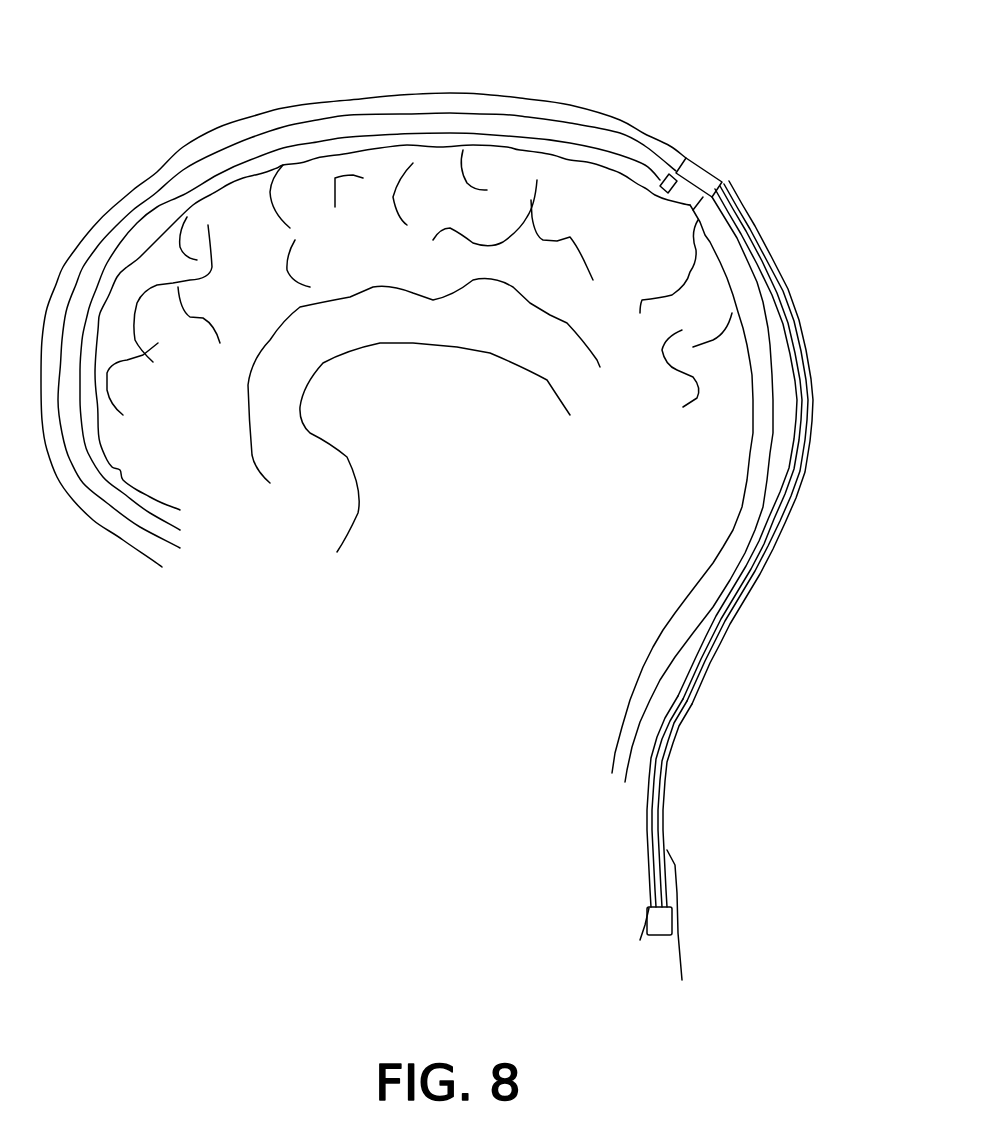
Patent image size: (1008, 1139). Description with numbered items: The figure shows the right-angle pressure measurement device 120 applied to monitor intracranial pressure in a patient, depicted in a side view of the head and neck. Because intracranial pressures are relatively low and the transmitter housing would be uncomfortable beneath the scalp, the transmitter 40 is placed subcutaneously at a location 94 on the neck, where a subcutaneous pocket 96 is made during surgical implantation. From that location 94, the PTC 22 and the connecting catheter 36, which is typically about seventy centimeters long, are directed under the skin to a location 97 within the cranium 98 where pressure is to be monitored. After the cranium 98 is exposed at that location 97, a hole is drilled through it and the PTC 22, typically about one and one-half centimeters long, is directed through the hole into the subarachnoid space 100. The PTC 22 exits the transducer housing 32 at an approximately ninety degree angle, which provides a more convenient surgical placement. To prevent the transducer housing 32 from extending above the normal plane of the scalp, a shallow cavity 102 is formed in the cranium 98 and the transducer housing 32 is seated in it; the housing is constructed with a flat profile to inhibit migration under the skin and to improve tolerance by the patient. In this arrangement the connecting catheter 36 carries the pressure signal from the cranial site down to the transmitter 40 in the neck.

The PTC 22 is at (667, 176).
The transducer housing 32 is at (695, 168).
The connecting catheter 36 is at (785, 520).
The transmitter 40 is at (662, 920).
The location 94 is at (670, 865).
The subcutaneous pocket 96 is at (650, 962).
The location 97 is at (637, 177).
The cranium 98 is at (459, 85).
The subarachnoid space 100 is at (760, 357).
The shallow cavity 102 is at (695, 203).
The pressure measurement device 120 is at (742, 171).